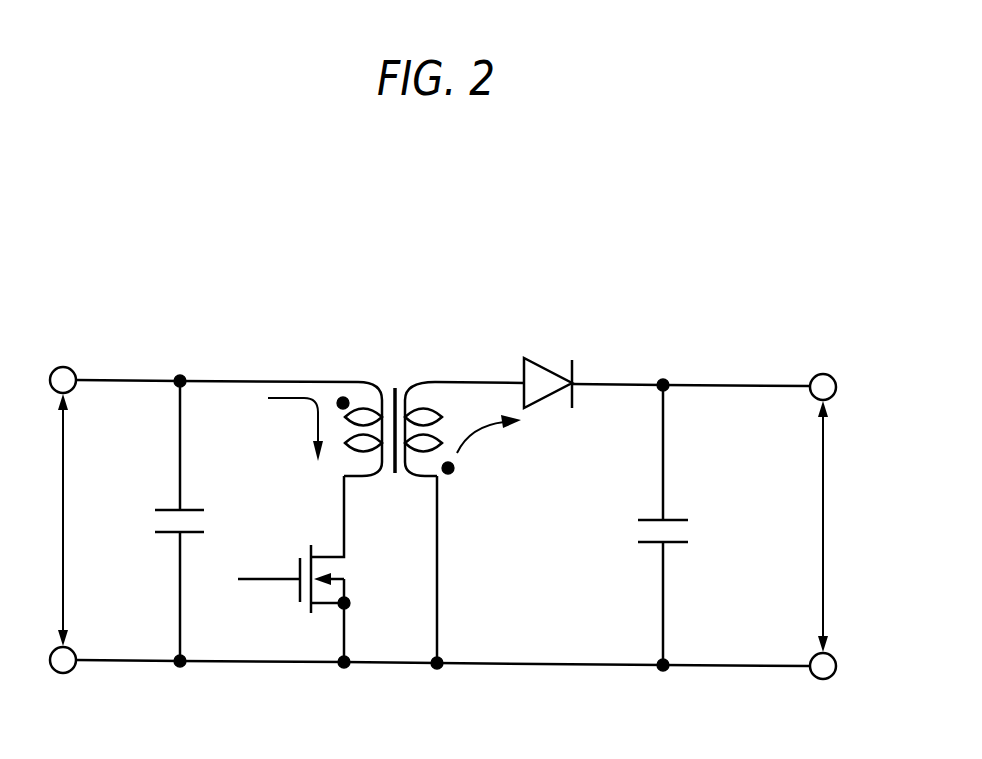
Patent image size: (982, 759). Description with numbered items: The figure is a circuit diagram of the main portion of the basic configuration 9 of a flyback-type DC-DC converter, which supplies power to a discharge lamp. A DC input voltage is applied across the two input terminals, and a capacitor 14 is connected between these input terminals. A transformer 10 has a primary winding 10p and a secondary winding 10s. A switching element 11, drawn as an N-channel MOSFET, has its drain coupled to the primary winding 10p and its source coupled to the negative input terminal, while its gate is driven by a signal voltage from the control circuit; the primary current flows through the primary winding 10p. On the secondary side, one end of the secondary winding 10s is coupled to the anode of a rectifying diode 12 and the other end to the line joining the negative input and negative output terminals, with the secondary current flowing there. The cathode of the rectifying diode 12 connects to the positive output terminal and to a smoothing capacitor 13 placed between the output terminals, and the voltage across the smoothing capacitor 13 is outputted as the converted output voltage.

The basic configuration 9 is at (292, 289).
The transformer 10 is at (468, 313).
The primary winding 10p is at (356, 381).
The secondary winding 10s is at (437, 381).
The switching element 11 is at (300, 562).
The rectifying diode 12 is at (547, 370).
The smoothing capacitor 13 is at (675, 518).
The capacitor 14 is at (195, 509).